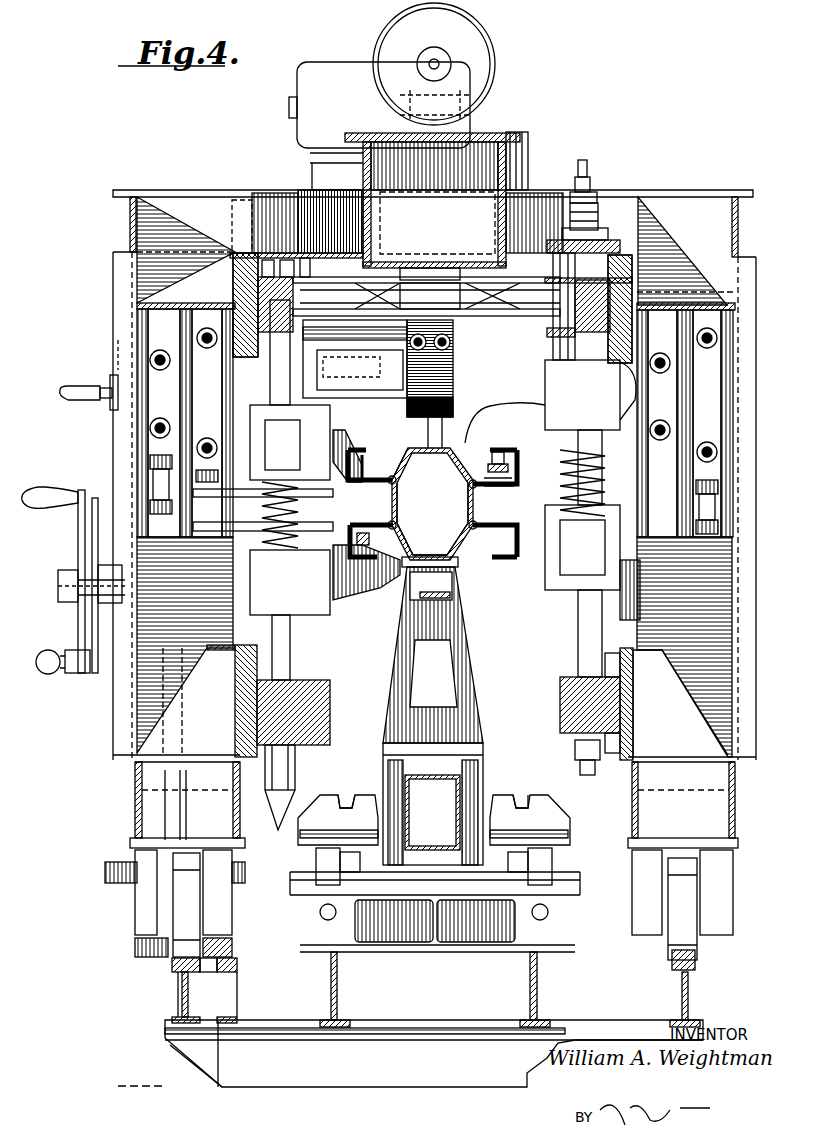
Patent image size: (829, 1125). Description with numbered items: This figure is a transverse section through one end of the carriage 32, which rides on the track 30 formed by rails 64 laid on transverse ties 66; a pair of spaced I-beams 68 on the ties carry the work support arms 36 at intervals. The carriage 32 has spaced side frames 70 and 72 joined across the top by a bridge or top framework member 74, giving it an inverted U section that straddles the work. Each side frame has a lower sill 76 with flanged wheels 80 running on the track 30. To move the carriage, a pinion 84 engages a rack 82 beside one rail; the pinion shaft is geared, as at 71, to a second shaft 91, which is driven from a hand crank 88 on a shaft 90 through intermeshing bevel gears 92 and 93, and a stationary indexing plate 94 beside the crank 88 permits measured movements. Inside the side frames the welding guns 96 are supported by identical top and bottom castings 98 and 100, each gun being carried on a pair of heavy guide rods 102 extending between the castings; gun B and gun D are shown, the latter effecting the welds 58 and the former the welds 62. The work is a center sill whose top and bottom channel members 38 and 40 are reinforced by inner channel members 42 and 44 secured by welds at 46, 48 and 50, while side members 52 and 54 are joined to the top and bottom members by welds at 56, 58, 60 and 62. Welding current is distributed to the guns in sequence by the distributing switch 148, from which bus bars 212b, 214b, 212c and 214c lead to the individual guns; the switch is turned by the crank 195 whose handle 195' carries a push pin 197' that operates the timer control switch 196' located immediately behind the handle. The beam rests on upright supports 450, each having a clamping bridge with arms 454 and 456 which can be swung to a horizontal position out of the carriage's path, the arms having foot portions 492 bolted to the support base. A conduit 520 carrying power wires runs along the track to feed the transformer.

The carriage 32 is at (658, 193).
The bridge or top framework member 74 is at (668, 187).
The transversely extending bus bar 212c is at (510, 275).
The transversely extending bus bar 214c is at (540, 275).
The transversely extending bus bar 212b is at (500, 286).
The transversely extending bus bar 214b is at (488, 316).
The top casting 98 is at (262, 268).
The guide rods 102 is at (320, 398).
The distributing switch 148 is at (395, 398).
The weld 46 is at (436, 448).
The top member 38 is at (452, 450).
The inner reinforcing channel member 42 is at (408, 449).
The weld 48 is at (412, 499).
The weld 50 is at (454, 499).
The inner reinforcing channel member 44 is at (440, 540).
The weld 58 is at (397, 537).
The bottom member 40 is at (458, 558).
The side member 52 is at (352, 450).
The weld 56 is at (378, 478).
The side member 54 is at (508, 478).
The weld 60 is at (505, 560).
The weld 62 is at (500, 452).
The welding gun B is at (580, 415).
The upright support 450 is at (478, 700).
The work support arms 36 is at (486, 775).
The conduit 520 is at (452, 808).
The arm 454 is at (372, 818).
The foot portion 492 is at (330, 795).
The arm 456 is at (570, 830).
The I-beams 68 is at (336, 995).
The transverse ties 66 is at (250, 1062).
The side frame 70 is at (134, 779).
The lower sill 76 is at (235, 800).
The second shaft 91 is at (178, 812).
The track 30 is at (178, 980).
The rails 64 is at (178, 1003).
The gearing 71 is at (115, 875).
The flanged wheels 80 is at (180, 892).
The pinion 84 is at (135, 950).
The rack 82 is at (232, 950).
The side frame 72 is at (737, 798).
The stationary indexing plate 94 is at (98, 490).
The hand crank 88 is at (58, 505).
The shaft 90 is at (100, 612).
The bevel gear 92 is at (117, 640).
The bevel gear 93 is at (208, 650).
The bottom casting 100 is at (240, 716).
The welding guns 96 is at (268, 450).
The welding gun D is at (300, 615).
The crank 195 is at (80, 379).
The timer control switch 196' is at (93, 351).
The handle 195' is at (67, 382).
The push pin 197' is at (51, 400).